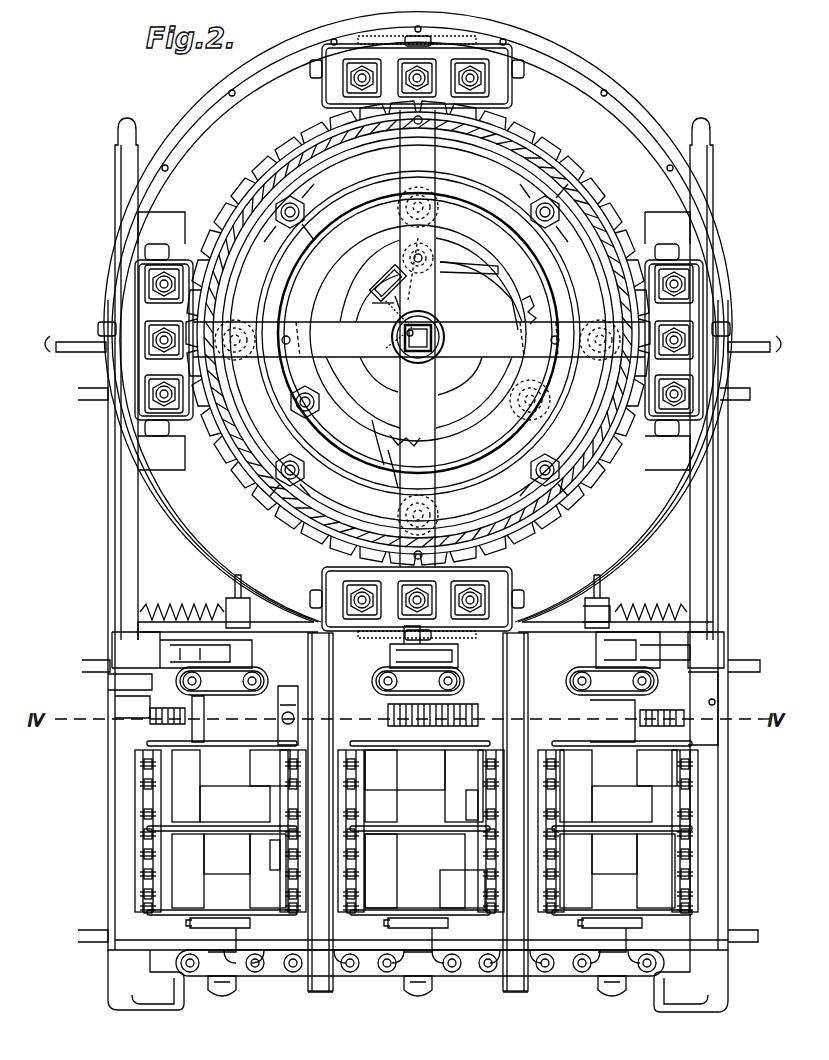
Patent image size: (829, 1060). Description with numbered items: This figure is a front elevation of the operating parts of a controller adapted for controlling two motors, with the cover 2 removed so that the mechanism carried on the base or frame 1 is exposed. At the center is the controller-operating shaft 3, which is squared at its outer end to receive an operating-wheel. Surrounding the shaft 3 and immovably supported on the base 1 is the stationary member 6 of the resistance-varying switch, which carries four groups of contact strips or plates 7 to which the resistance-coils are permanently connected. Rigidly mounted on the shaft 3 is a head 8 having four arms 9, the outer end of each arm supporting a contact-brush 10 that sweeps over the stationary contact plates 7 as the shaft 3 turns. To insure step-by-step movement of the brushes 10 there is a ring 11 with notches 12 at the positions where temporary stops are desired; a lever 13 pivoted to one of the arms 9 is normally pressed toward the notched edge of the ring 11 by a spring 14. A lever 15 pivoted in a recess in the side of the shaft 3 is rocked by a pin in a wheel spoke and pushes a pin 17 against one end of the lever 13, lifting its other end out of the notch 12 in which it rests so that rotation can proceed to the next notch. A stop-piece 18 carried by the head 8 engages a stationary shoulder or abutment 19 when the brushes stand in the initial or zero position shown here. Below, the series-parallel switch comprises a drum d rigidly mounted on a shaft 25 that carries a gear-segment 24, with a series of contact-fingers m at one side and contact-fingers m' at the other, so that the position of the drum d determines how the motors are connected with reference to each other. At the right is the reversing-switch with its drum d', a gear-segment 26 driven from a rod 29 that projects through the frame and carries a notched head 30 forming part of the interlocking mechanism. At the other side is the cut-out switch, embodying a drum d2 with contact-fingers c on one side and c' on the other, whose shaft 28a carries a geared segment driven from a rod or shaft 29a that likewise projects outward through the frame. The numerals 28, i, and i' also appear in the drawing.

The base or frame 1 is at (418, 317).
The cover 2 is at (418, 193).
The controller-operating shaft 3 is at (432, 336).
The stationary member of the resistance-varying switch 6 is at (418, 333).
The contact strips or plates 7 is at (562, 485).
The head 8 is at (418, 351).
The arms 9 is at (419, 338).
The contact-brush 10 is at (424, 52).
The ring 11 is at (423, 333).
The notches 12 is at (419, 405).
The lever 13 is at (392, 277).
The spring 14 is at (408, 256).
The lever 15 is at (387, 343).
The pin 17 is at (372, 311).
The stop-piece or projection 18 is at (400, 443).
The stationary shoulder or abutment 19 is at (400, 488).
The gear-segment 24 is at (432, 676).
The shaft 25 is at (432, 940).
The gear-segment 26 is at (652, 710).
The pin 28 is at (626, 940).
The shaft 28a is at (236, 940).
The rod 29 is at (700, 532).
The rod or shaft 29a is at (150, 535).
The head 30 is at (706, 688).
The contact-fingers c is at (141, 831).
The contact-fingers c' is at (303, 831).
The drum d is at (420, 828).
The drum d' is at (622, 828).
The drum d2 is at (222, 828).
The contact-fingers m is at (304, 861).
The contact-fingers m' is at (432, 831).
The contact i is at (500, 839).
The contact i' is at (622, 831).